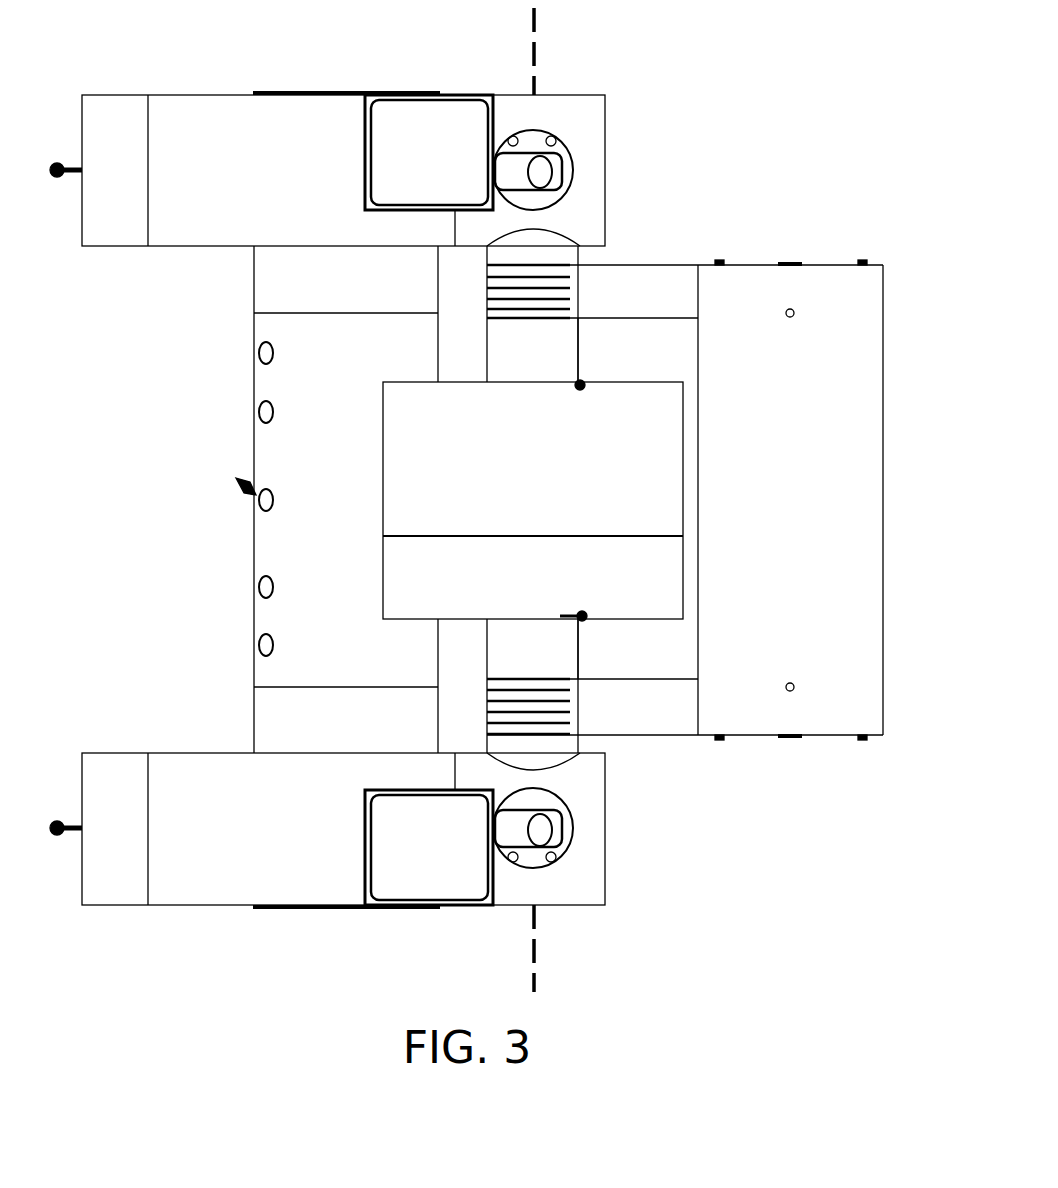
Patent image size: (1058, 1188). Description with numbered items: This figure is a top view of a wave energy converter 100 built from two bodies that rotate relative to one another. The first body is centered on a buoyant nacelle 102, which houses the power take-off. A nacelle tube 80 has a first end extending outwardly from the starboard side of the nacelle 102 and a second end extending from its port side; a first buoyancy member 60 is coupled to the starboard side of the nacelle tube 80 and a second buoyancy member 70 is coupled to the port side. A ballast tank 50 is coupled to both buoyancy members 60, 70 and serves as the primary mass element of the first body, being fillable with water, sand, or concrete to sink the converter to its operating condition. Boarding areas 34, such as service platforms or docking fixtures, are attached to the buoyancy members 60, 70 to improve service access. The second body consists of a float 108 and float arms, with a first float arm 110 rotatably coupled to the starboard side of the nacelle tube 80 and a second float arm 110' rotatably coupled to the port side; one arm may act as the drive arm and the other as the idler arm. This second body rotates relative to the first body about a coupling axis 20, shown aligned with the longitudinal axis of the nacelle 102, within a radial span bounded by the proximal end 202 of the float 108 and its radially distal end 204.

The coupling axis 20 is at (538, 950).
The boarding areas 34 is at (429, 500).
The ballast tank 50 is at (258, 455).
The first buoyancy member 60 is at (203, 906).
The second buoyancy member 70 is at (205, 93).
The nacelle tube 80 is at (583, 352).
The wave energy converter 100 is at (672, 458).
The nacelle 102 is at (533, 500).
The float 108 is at (870, 496).
The float arm 110 is at (582, 705).
The second float arm 110' is at (578, 295).
The proximal end of the float 202 is at (700, 358).
The radially distal end of the float 204 is at (838, 500).